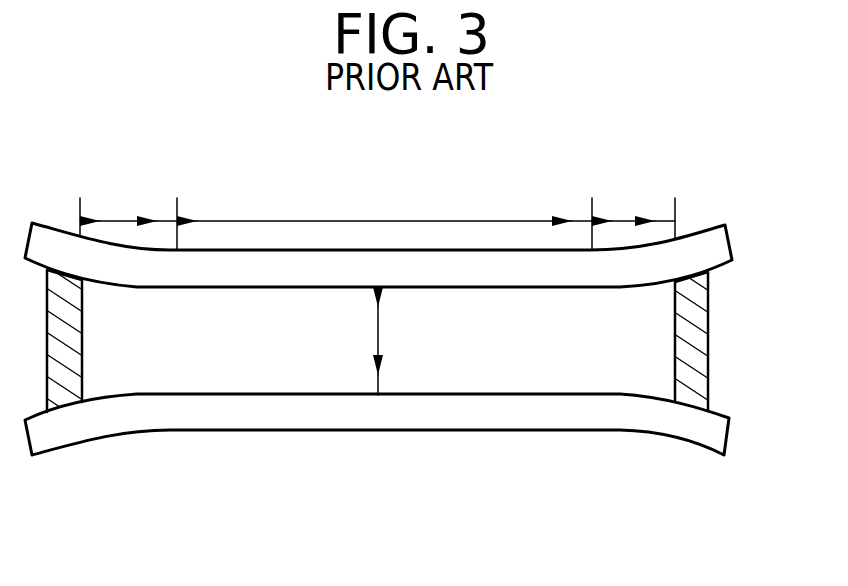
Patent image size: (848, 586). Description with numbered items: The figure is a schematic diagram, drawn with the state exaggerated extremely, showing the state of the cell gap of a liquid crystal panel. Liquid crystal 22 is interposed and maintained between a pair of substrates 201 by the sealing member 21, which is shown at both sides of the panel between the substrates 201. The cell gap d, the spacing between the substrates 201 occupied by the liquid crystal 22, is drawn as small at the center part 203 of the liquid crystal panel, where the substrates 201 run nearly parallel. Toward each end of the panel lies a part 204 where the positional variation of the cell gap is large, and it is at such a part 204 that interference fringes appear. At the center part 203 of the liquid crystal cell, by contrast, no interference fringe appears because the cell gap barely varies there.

The substrate 201 is at (715, 247).
The sealing member 21 is at (710, 340).
The liquid crystal 22 is at (327, 378).
The center part 203 is at (328, 222).
The part 204 is at (127, 218).